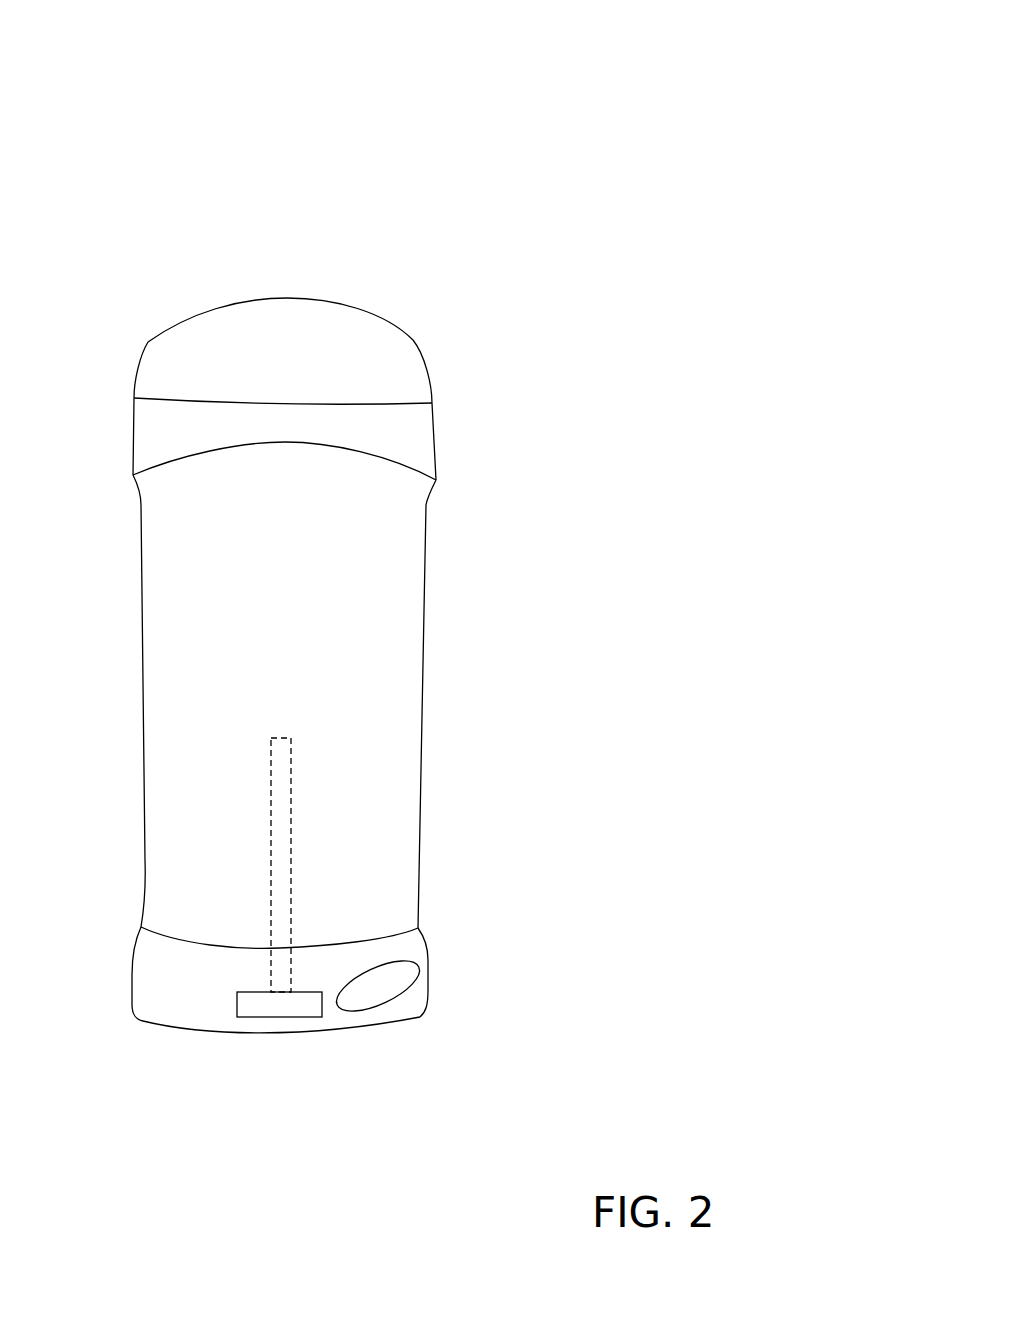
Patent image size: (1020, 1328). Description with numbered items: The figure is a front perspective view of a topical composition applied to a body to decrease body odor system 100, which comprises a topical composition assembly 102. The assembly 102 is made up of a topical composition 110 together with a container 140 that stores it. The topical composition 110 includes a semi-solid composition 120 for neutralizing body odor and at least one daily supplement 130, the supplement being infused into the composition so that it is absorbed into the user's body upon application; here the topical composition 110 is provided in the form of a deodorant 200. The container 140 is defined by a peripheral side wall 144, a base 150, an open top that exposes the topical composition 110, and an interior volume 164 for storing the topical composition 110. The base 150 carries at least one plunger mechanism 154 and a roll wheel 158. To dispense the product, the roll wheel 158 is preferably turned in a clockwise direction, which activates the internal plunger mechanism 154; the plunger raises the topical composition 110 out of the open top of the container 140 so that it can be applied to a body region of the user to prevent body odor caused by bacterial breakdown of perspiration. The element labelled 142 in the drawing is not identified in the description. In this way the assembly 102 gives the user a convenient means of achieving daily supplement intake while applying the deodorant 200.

The topical composition applied to a body to decrease body odor system 100 is at (578, 100).
The topical composition assembly 102 is at (581, 185).
The topical composition 110 is at (205, 365).
The semi-solid composition 120 is at (403, 368).
The daily supplement 130 is at (237, 333).
The container 140 is at (420, 760).
The top wall 142 is at (285, 298).
The peripheral side wall 144 is at (318, 704).
The base 150 is at (380, 938).
The plunger mechanism 154 is at (275, 963).
The roll wheel 158 is at (287, 1018).
The interior volume 164 is at (193, 615).
The deodorant 200 is at (375, 310).